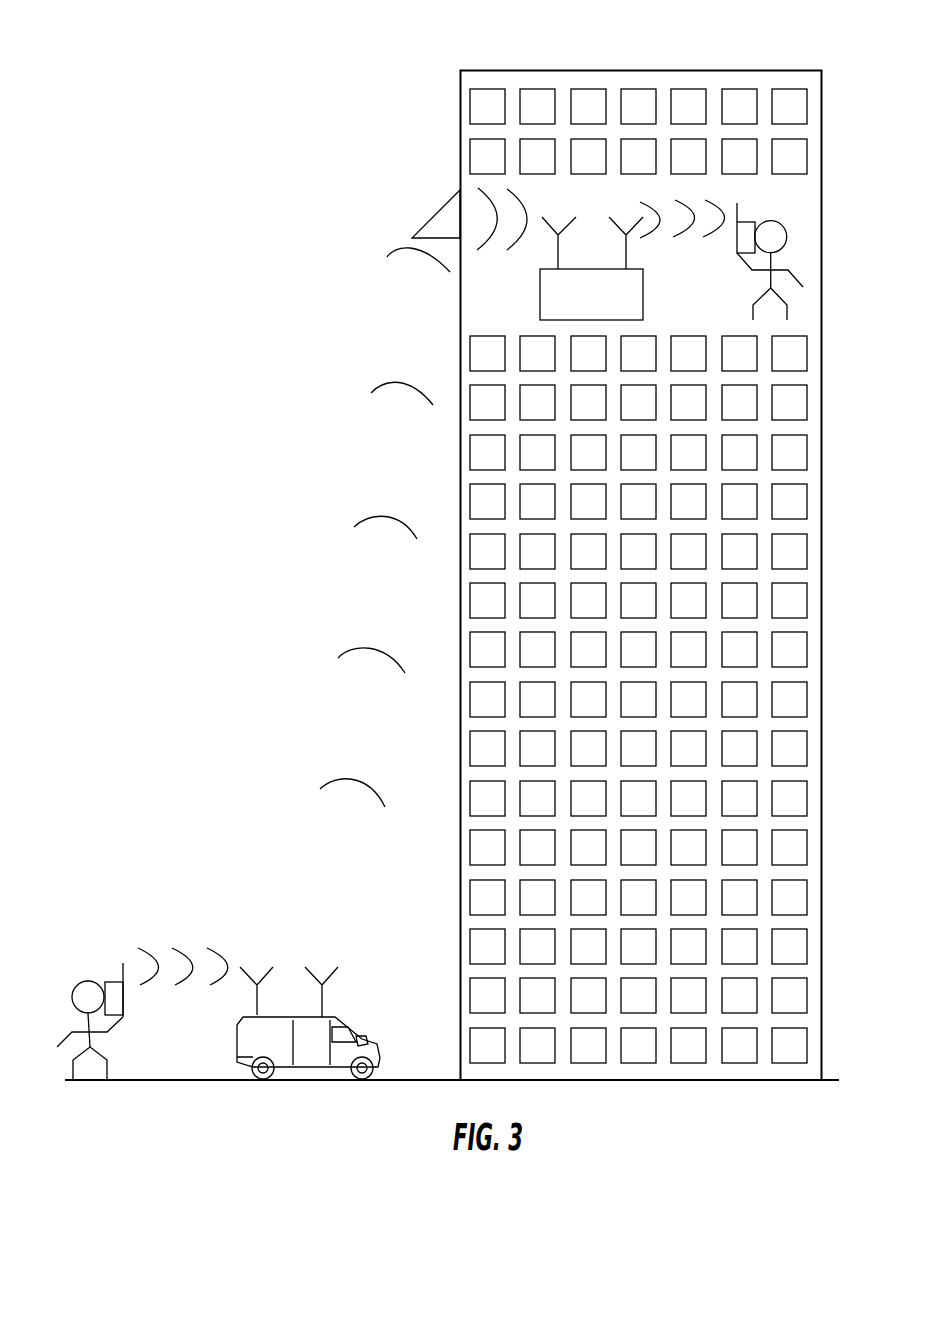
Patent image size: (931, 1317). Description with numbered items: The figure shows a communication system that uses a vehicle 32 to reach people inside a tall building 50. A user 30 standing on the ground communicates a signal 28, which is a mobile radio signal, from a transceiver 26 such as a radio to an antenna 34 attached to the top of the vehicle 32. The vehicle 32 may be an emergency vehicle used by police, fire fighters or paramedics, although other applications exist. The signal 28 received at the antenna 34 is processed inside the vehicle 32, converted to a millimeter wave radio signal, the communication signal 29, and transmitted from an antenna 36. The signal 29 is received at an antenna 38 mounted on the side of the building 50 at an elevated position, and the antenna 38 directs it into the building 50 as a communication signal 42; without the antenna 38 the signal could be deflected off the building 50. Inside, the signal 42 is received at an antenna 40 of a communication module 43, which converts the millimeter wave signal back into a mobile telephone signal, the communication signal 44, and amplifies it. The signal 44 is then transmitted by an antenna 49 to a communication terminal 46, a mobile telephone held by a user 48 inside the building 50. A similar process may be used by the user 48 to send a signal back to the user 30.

The transceiver 26 is at (123, 998).
The signal 28 is at (195, 951).
The communication signal 29 is at (342, 622).
The user 30 is at (92, 1045).
The vehicle 32 is at (257, 1037).
The antenna 34 is at (373, 960).
The antenna 36 is at (327, 1000).
The antenna 38 is at (443, 222).
The antenna 40 is at (562, 255).
The communication signal 42 is at (518, 200).
The communication module 43 is at (558, 305).
The communication signal 44 is at (693, 197).
The communication terminal 46 is at (743, 235).
The user 48 is at (765, 290).
The antenna 49 is at (627, 252).
The building 50 is at (460, 127).